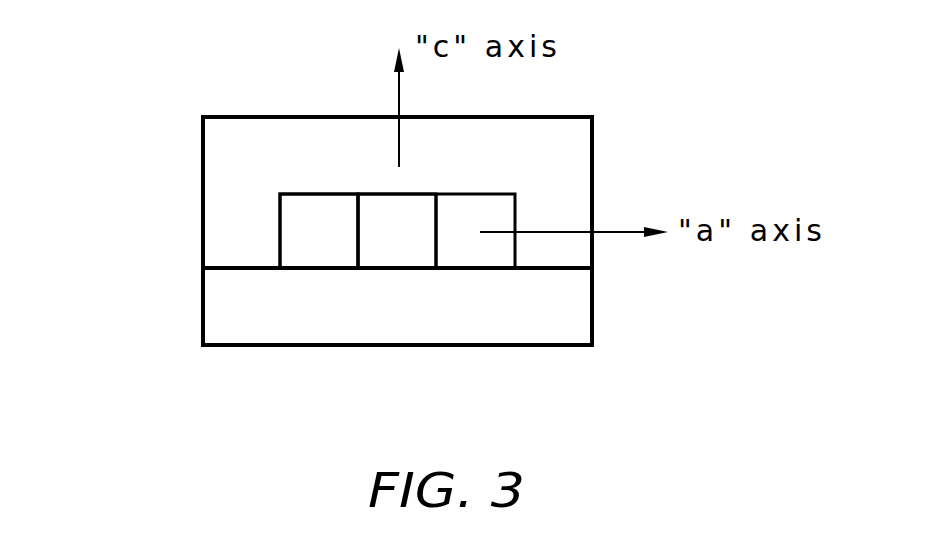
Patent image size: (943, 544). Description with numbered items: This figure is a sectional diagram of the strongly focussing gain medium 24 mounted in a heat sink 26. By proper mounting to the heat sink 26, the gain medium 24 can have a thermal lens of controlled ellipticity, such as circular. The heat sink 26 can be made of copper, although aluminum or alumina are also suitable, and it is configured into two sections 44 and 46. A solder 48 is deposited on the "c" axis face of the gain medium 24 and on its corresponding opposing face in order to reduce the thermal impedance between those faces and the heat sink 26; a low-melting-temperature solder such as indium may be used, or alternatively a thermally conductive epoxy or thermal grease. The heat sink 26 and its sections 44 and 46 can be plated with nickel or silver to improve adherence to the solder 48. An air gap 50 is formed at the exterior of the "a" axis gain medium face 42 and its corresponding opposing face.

The gain medium 24 is at (370, 296).
The heat sink 26 is at (781, 54).
The "a" axis gain medium face 42 is at (481, 272).
The heat sink section 44 is at (397, 333).
The heat sink section 46 is at (333, 231).
The solder 48 is at (352, 316).
The air gap 50 is at (283, 165).